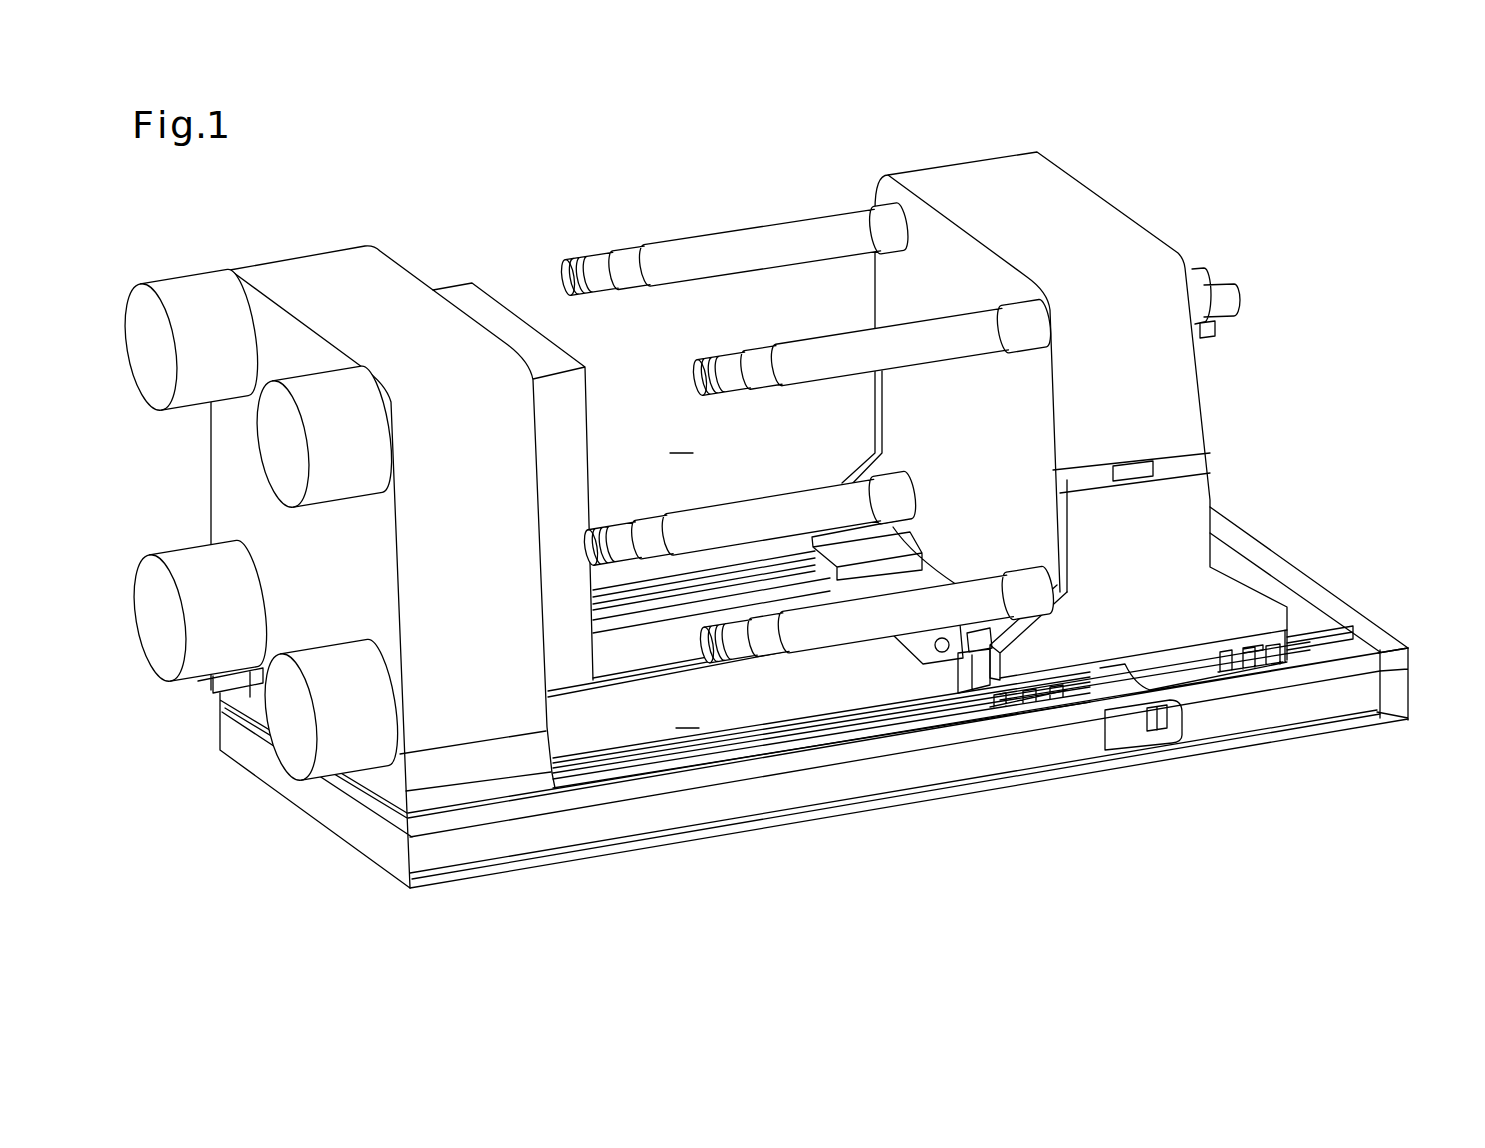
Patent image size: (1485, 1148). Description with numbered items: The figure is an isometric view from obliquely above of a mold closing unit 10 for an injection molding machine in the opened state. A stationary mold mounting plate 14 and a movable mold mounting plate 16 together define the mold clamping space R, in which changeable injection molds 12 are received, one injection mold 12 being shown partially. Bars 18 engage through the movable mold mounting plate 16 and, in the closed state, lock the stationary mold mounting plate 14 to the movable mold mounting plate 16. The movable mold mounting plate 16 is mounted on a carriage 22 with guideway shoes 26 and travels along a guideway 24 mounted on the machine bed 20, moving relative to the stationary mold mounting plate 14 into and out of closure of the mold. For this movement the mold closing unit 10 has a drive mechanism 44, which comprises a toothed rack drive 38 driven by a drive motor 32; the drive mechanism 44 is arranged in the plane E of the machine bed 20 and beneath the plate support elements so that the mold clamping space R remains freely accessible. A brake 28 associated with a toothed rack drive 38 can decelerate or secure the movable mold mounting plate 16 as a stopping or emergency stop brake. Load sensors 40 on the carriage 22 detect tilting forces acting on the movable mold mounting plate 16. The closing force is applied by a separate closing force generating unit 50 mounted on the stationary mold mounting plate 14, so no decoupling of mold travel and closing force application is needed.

The mold closing unit 10 is at (782, 501).
The injection mold 12 is at (477, 305).
The stationary mold mounting plate 14 is at (315, 288).
The movable mold mounting plate 16 is at (1085, 262).
The bars 18 is at (782, 242).
The machine bed 20 is at (1357, 699).
The carriage 22 is at (1185, 667).
The guideway 24 is at (1320, 650).
The guideway shoes 26 is at (1264, 652).
The brake 28 is at (1130, 725).
The drive motor 32 is at (929, 653).
The toothed rack drive 38 is at (968, 679).
The load sensors 40 is at (1025, 696).
The drive mechanism 44 is at (951, 751).
The closing force generating unit 50 is at (188, 293).